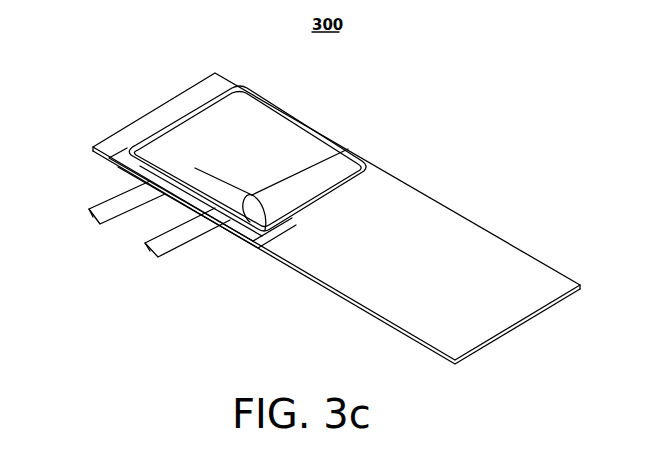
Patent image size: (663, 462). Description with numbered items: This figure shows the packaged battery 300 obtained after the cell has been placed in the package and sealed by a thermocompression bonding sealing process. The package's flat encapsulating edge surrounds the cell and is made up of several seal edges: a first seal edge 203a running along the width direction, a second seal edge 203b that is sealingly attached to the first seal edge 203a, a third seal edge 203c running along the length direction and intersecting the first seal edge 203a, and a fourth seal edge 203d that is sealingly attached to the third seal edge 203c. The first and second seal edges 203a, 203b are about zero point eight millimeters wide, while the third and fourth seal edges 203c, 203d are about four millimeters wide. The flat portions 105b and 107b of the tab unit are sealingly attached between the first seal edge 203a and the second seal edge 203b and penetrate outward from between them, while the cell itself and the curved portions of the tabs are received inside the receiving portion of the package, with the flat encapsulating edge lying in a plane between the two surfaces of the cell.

The packaged battery 300 is at (336, 218).
The fourth seal edge 203d is at (145, 132).
The third seal edge 203c is at (112, 159).
The first seal edge 203a is at (123, 170).
The second seal edge 203b is at (176, 187).
The flat portion 105b is at (91, 220).
The flat portion 107b is at (156, 255).